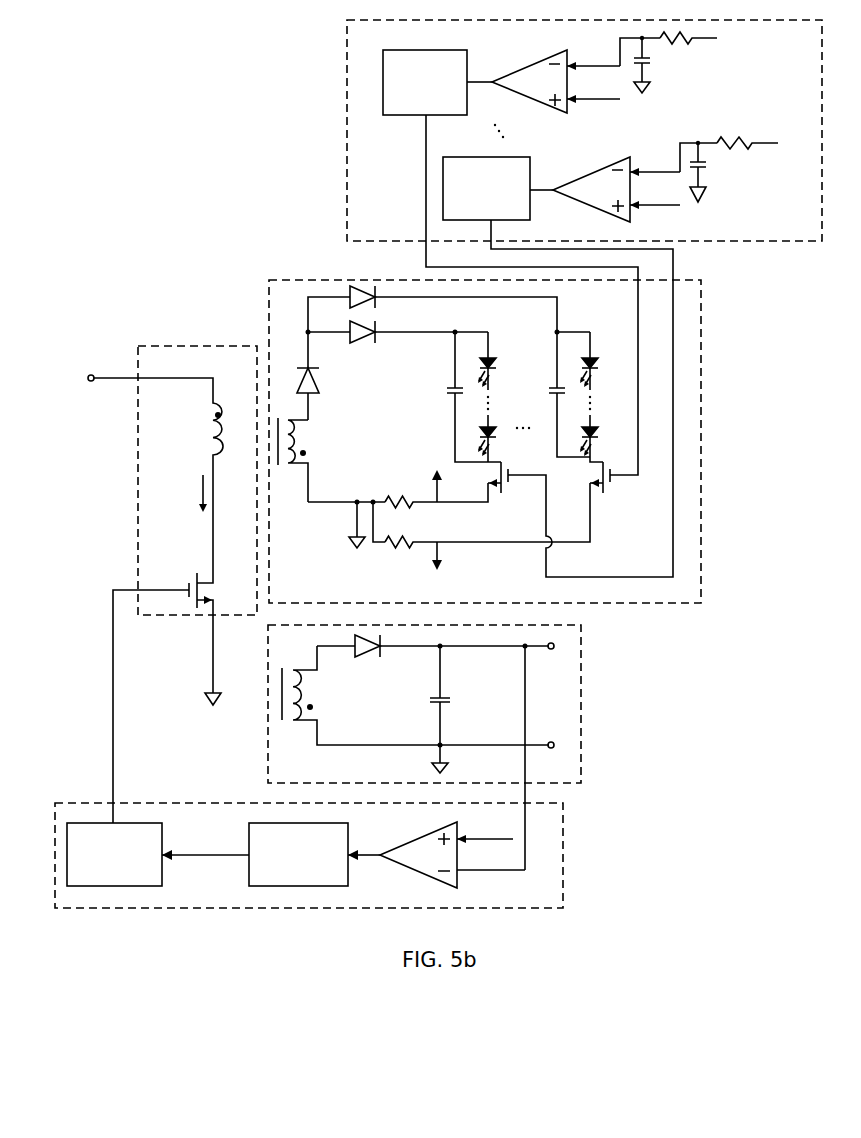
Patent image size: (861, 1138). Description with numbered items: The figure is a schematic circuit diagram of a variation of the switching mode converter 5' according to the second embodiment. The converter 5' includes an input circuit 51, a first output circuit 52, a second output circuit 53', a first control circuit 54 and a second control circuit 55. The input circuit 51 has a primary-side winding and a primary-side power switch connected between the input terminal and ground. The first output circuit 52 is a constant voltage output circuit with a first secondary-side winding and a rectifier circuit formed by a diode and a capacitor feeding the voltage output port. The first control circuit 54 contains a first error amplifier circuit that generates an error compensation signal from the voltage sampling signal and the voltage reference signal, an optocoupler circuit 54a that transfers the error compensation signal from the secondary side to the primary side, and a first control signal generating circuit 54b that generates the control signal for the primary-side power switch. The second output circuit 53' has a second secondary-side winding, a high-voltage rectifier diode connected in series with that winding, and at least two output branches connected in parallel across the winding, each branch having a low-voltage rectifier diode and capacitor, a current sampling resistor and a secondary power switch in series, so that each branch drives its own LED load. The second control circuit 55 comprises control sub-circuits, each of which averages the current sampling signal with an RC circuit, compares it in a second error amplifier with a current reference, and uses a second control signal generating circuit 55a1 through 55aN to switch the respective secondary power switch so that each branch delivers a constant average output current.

The switching mode converter 5' is at (437, 464).
The input circuit 51 is at (160, 347).
The first output circuit 52 is at (582, 725).
The second output circuit 53' is at (512, 441).
The first control circuit 54 is at (565, 887).
The optocoupler circuit 54a is at (298, 854).
The first control signal generating circuit 54b is at (114, 854).
The second control circuit 55 is at (346, 158).
The second control signal generating circuit 55a1 is at (486, 188).
The second control signal generating circuit 55aN is at (425, 82).